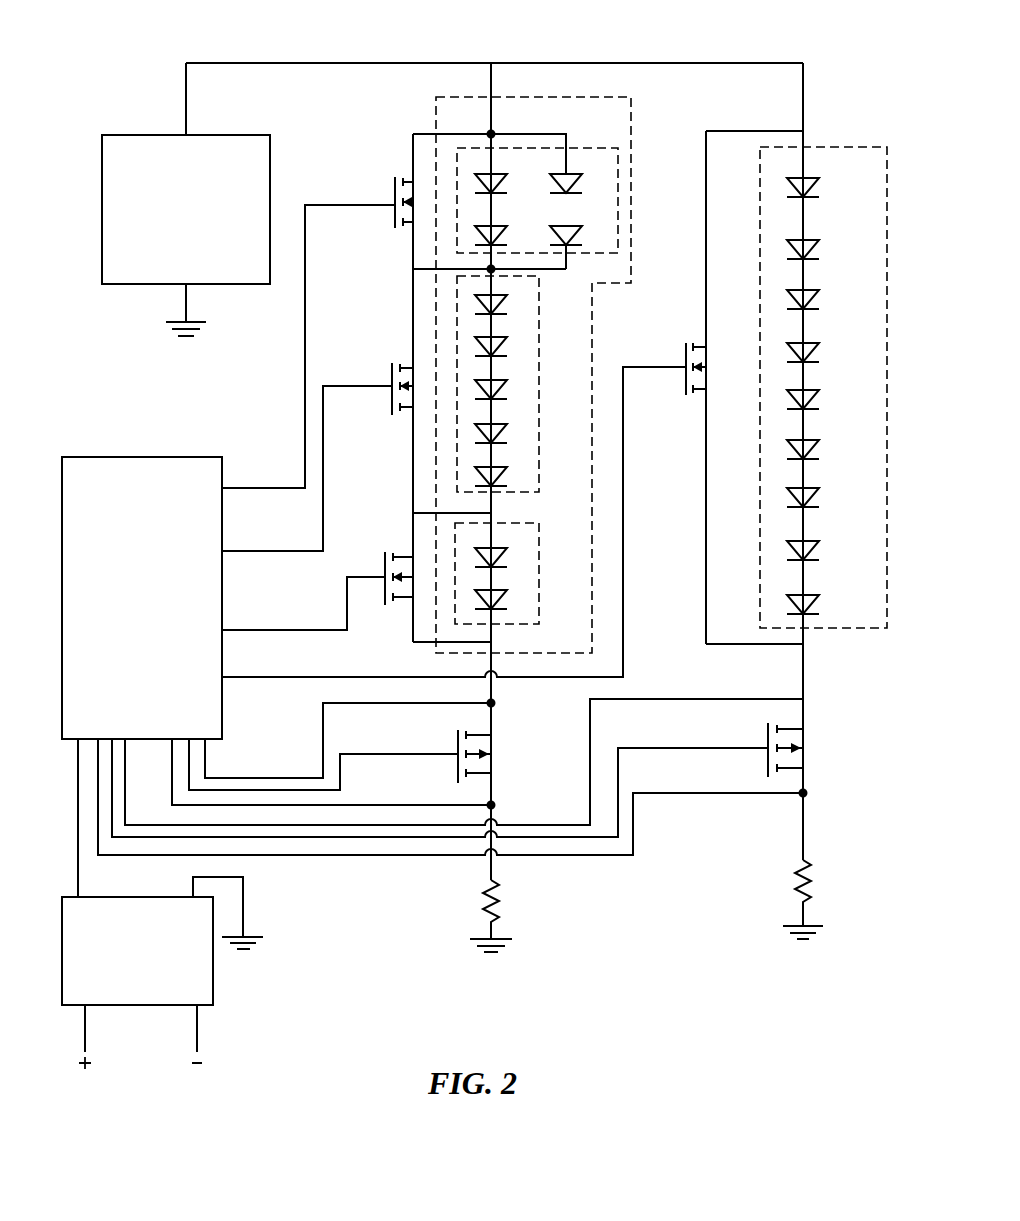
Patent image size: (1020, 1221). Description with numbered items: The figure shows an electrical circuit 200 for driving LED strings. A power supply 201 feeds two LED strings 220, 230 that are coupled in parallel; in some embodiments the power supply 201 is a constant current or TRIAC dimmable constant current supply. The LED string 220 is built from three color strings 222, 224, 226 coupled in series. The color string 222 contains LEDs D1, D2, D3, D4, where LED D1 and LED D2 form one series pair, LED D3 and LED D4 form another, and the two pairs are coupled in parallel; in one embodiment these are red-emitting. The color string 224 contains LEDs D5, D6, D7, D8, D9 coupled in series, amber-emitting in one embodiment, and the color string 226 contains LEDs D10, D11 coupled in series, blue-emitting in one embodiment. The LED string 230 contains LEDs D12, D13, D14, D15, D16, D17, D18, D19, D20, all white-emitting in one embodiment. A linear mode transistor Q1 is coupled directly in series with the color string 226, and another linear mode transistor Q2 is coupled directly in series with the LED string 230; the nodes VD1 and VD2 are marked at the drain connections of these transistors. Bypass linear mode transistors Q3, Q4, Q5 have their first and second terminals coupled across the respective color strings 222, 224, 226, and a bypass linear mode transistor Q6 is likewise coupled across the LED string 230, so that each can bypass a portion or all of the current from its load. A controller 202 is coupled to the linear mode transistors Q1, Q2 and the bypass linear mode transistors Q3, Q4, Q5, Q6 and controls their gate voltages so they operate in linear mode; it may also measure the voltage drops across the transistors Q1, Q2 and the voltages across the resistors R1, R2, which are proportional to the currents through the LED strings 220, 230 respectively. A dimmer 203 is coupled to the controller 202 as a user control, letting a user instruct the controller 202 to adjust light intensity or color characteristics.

The electrical circuit 200 is at (338, 38).
The power supply 201 is at (186, 235).
The controller 202 is at (432, 551).
The dimmer 203 is at (162, 973).
The LED string 220 is at (522, 361).
The color string 222 is at (537, 184).
The color string 224 is at (521, 384).
The color string 226 is at (497, 561).
The LED string 230 is at (824, 375).
The linear mode transistor Q1 is at (491, 769).
The linear mode transistor Q2 is at (803, 760).
The bypass linear mode transistor Q3 is at (397, 188).
The bypass linear mode transistor Q4 is at (395, 374).
The bypass linear mode transistor Q5 is at (393, 567).
The bypass linear mode transistor Q6 is at (735, 387).
The resistor R1 is at (501, 916).
The resistor R2 is at (812, 899).
The drain voltage node VD1 is at (513, 703).
The drain voltage node VD2 is at (832, 699).
The LED D1 is at (506, 172).
The LED D2 is at (506, 223).
The LED D3 is at (580, 172).
The LED D4 is at (580, 223).
The LED D5 is at (505, 297).
The LED D6 is at (505, 343).
The LED D7 is at (505, 385).
The LED D8 is at (505, 429).
The LED D9 is at (505, 472).
The LED D10 is at (505, 547).
The LED D11 is at (505, 588).
The LED D12 is at (829, 183).
The LED D13 is at (829, 246).
The LED D14 is at (829, 296).
The LED D15 is at (829, 349).
The LED D16 is at (829, 396).
The LED D17 is at (829, 446).
The LED D18 is at (829, 494).
The LED D19 is at (829, 547).
The LED D20 is at (829, 601).